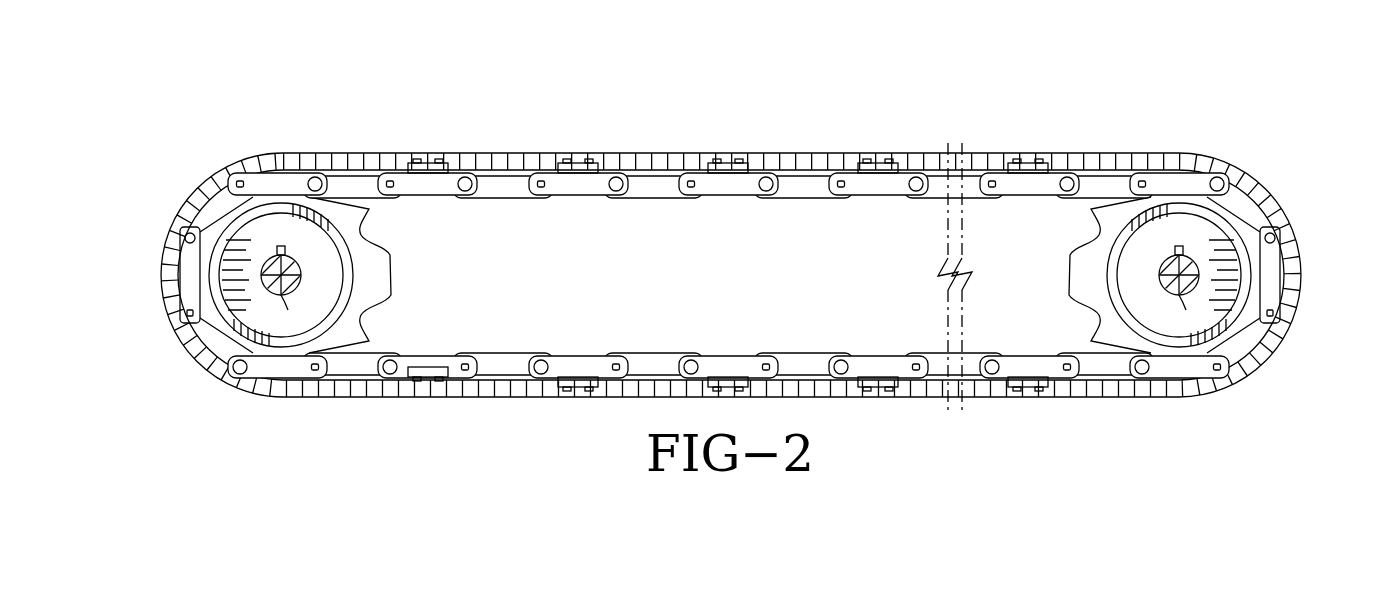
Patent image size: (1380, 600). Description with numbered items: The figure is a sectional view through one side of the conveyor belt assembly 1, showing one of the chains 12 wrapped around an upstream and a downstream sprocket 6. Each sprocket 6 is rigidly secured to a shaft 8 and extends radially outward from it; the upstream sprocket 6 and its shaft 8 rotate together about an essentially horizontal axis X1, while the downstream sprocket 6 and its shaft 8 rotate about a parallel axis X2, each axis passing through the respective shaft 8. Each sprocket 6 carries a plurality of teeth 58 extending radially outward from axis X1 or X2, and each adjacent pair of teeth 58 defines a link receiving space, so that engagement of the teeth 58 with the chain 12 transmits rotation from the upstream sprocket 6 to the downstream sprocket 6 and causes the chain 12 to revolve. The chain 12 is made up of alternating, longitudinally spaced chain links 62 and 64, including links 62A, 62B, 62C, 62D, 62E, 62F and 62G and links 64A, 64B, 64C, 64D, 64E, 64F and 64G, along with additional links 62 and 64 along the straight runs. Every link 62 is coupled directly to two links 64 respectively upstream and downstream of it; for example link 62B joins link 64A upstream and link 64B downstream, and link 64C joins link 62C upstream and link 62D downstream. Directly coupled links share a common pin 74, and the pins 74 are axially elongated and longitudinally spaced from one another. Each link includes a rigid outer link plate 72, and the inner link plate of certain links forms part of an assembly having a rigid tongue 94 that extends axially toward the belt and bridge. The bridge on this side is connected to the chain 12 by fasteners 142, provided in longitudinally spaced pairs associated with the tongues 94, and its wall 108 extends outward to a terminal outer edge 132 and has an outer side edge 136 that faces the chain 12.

The conveyor belt assembly 1 is at (731, 210).
The sprocket 6 is at (404, 268).
The shaft 8 is at (292, 275).
The chain 12 is at (728, 263).
The sprocket tooth 58 is at (252, 165).
The chain link 62 is at (728, 278).
The chain link 62A is at (268, 176).
The chain link 62B is at (476, 217).
The chain link 62C is at (590, 192).
The chain link 62D is at (722, 192).
The chain link 62E is at (873, 192).
The chain link 62F is at (1040, 194).
The chain link 62G is at (1186, 176).
The chain link 64 is at (729, 275).
The chain link 64A is at (346, 180).
The chain link 64B is at (505, 192).
The chain link 64C is at (650, 192).
The chain link 64D is at (796, 192).
The chain link 64E is at (937, 173).
The chain link 64F is at (1098, 176).
The chain link 64G is at (1243, 208).
The outer link plate 72 is at (443, 212).
The pin 74 is at (316, 176).
The tongue 94 is at (428, 163).
The wall 108 is at (731, 224).
The outer edge 132 is at (788, 154).
The outer side edge 136 is at (731, 224).
The fastener 142 is at (440, 170).
The axis X1 is at (290, 314).
The axis X2 is at (1190, 314).